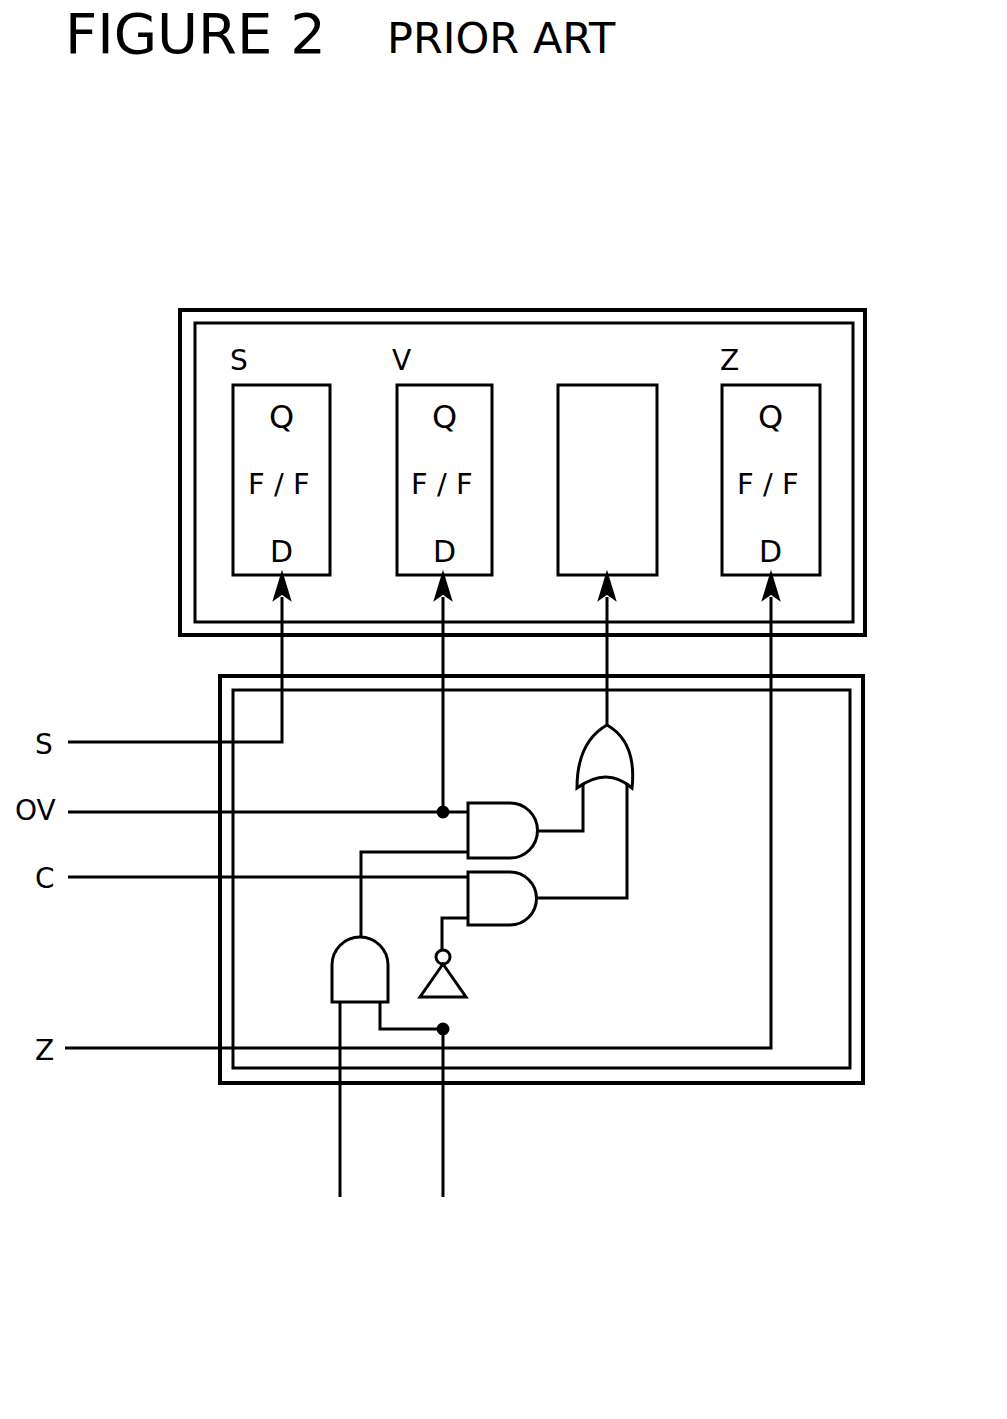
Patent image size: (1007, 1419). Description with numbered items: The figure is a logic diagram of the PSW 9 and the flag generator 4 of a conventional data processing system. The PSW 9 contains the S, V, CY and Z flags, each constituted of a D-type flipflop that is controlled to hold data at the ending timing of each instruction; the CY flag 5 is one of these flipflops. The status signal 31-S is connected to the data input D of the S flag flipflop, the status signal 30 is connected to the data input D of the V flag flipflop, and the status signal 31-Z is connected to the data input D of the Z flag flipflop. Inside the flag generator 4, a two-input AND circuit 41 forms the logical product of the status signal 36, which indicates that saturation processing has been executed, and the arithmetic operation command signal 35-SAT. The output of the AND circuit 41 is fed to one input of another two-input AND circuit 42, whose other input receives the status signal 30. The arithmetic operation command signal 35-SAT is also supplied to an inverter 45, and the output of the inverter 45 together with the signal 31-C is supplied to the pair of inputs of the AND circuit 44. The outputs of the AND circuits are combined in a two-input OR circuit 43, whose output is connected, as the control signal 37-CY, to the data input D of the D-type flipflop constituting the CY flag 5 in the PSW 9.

The PSW 9 is at (648, 310).
The CY flag 5 is at (657, 545).
The flag generator 4 is at (717, 1085).
The status signal corresponding to sign information S 31-S is at (150, 742).
The status signal 30 is at (150, 812).
The status signal corresponding to carry/borrow signal C 31-C is at (150, 877).
The status signal corresponding to information Z 31-Z is at (150, 1048).
The control signal 37-CY is at (607, 715).
The 2-input AND circuit 42 is at (492, 803).
The AND circuit 44 is at (500, 925).
The 2-input OR circuit 43 is at (634, 765).
The 2-input AND circuit 41 is at (332, 975).
The inverter 45 is at (466, 986).
The status signal 36 is at (340, 1143).
The arithmetic operation command signal 35-SAT is at (443, 1150).